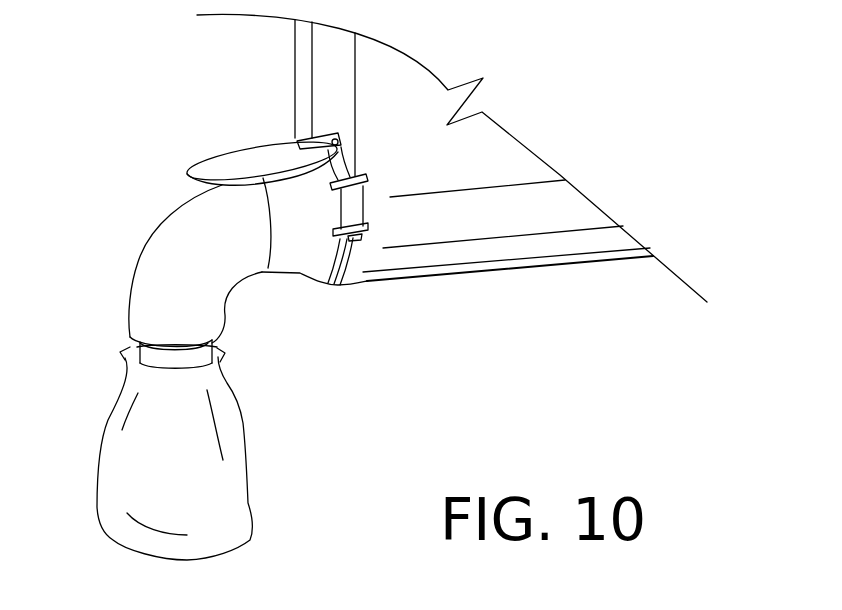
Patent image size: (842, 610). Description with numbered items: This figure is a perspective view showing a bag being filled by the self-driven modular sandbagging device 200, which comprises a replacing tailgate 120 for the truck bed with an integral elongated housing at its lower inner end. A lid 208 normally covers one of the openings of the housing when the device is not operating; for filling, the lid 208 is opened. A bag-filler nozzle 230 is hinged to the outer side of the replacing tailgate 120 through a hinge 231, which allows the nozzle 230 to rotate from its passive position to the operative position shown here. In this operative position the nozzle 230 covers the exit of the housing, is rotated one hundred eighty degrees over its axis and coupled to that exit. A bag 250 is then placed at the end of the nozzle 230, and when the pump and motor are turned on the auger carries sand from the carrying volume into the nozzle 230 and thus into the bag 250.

The tailgate 120 is at (300, 60).
The self-driven modular sandbagging device 200 is at (602, 335).
The lid 208 is at (262, 164).
The bag-filler nozzle 230 is at (182, 268).
The hinge 231 is at (452, 335).
The bag 250 is at (322, 508).